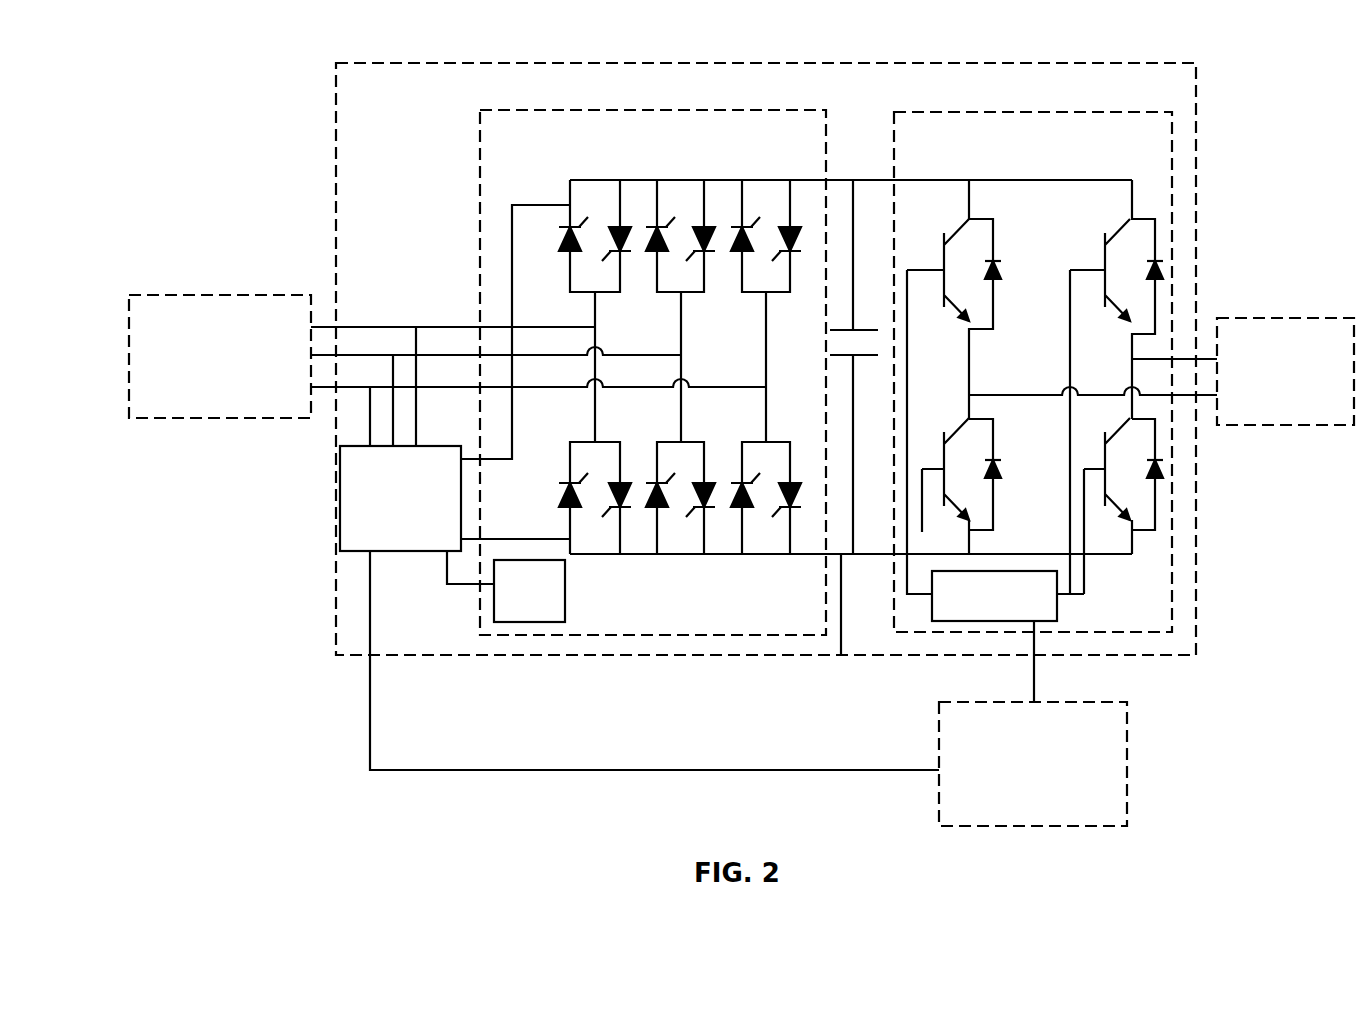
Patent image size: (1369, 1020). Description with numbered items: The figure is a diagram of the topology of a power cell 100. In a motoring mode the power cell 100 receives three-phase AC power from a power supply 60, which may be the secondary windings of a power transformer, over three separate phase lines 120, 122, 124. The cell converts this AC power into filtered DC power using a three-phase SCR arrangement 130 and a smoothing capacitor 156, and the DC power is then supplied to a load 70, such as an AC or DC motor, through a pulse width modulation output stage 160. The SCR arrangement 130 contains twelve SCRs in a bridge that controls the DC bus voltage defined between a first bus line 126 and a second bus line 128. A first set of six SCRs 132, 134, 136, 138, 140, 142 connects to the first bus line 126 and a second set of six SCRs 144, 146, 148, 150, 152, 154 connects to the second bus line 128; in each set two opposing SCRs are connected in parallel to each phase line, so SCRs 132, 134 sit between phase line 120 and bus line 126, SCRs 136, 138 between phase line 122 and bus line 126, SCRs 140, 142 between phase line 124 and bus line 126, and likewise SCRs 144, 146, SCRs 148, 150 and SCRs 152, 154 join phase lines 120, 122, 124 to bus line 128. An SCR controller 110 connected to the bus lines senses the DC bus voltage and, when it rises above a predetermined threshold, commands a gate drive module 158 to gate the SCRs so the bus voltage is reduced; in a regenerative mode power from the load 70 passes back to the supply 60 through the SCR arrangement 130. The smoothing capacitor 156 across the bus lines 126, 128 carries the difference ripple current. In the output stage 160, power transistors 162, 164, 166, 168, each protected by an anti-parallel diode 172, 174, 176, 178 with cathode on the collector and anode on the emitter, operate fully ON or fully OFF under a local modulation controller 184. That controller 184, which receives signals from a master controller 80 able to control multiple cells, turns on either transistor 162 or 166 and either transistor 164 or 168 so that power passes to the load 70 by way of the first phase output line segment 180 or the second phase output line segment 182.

The power supply 60 is at (172, 292).
The load 70 is at (1296, 316).
The master controller 80 is at (1125, 770).
The power cell 100 is at (1196, 90).
The SCR controller 110 is at (420, 551).
The first phase line 120 is at (348, 324).
The second phase line 122 is at (355, 352).
The third phase line 124 is at (362, 384).
The first bus line 126 is at (840, 178).
The second bus line 128 is at (839, 655).
The SCR arrangement 130 is at (648, 108).
The SCR 132 is at (566, 250).
The SCR 134 is at (620, 226).
The SCR 136 is at (653, 250).
The SCR 138 is at (704, 226).
The SCR 140 is at (738, 250).
The SCR 142 is at (790, 226).
The SCR 144 is at (572, 506).
The SCR 146 is at (620, 482).
The SCR 148 is at (658, 506).
The SCR 150 is at (703, 482).
The SCR 152 is at (743, 506).
The SCR 154 is at (790, 482).
The smoothing capacitor 156 is at (858, 356).
The gate drive module 158 is at (563, 592).
The PWM output stage 160 is at (1030, 110).
The transistor 162 is at (943, 290).
The transistor 164 is at (1104, 295).
The transistor 166 is at (944, 447).
The transistor 168 is at (1104, 455).
The anti-parallel diode 172 is at (997, 270).
The anti-parallel diode 174 is at (1166, 272).
The anti-parallel diode 176 is at (999, 472).
The anti-parallel diode 178 is at (1168, 475).
The first phase output line segment 180 is at (1203, 356).
The second phase output line segment 182 is at (1203, 395).
The local modulation controller 184 is at (1058, 611).